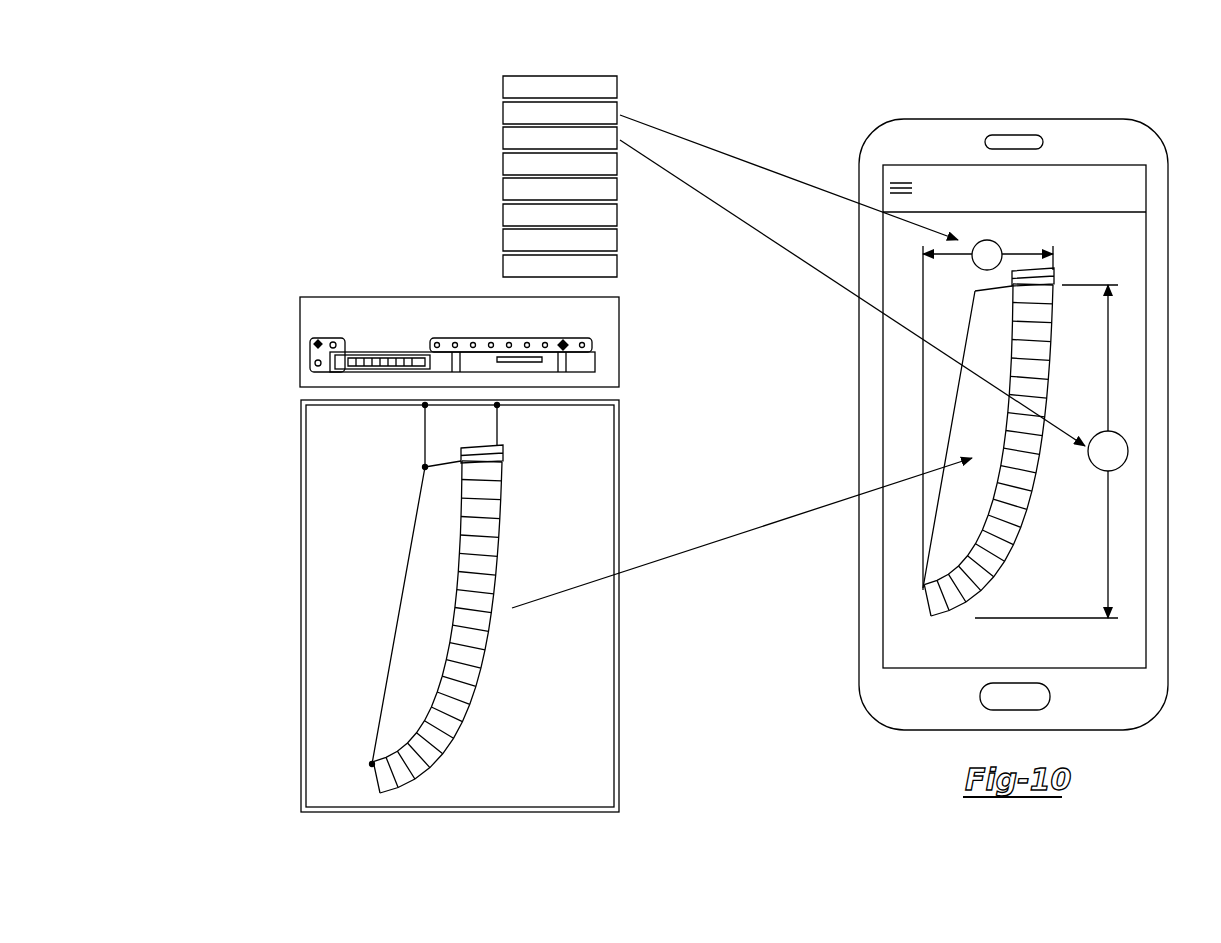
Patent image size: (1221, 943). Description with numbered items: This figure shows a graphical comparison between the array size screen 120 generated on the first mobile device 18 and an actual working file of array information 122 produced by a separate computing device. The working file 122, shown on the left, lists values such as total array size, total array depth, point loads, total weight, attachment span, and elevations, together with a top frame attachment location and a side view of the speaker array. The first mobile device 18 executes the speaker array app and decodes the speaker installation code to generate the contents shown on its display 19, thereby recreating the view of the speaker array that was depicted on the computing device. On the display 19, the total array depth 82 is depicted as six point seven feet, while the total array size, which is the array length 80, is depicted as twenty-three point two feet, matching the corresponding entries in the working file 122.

The actual working file of array information 122 is at (310, 118).
The first mobile device 18 is at (983, 118).
The display 19 is at (1127, 247).
The array size screen 120 is at (1180, 137).
The array depth 82 is at (987, 240).
The array length 80 is at (1128, 451).